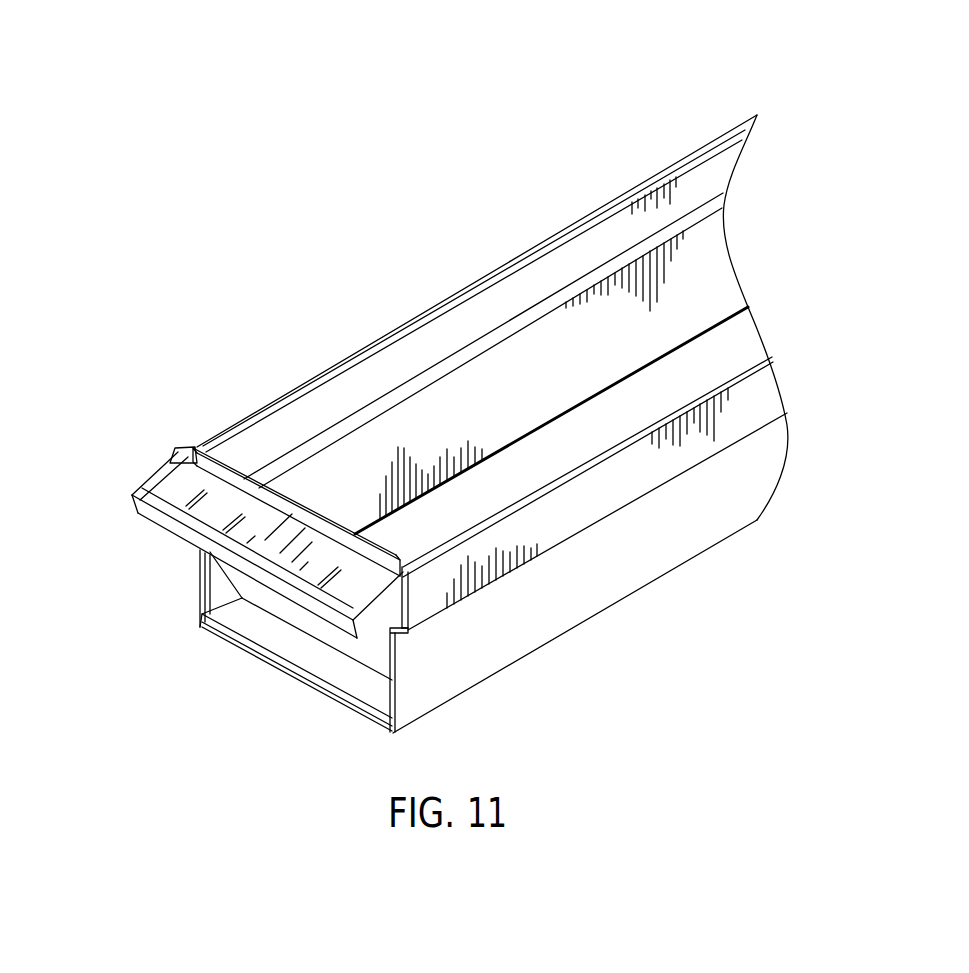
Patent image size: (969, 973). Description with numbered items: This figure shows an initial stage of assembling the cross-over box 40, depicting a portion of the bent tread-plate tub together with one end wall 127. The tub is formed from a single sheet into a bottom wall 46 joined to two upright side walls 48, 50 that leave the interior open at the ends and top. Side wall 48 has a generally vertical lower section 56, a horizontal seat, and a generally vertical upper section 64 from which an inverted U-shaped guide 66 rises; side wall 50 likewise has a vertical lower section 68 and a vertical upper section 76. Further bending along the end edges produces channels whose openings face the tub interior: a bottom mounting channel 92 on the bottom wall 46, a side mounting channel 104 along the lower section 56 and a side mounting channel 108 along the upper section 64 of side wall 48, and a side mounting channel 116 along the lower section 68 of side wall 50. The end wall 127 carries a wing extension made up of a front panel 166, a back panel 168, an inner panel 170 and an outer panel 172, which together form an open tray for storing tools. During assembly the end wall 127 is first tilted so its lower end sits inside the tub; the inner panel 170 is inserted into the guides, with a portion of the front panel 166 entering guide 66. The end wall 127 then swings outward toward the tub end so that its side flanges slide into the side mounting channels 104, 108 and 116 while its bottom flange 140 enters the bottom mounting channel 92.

The rail assembly 40 is at (592, 163).
The side wall 50 is at (461, 263).
The upper section 76 is at (717, 167).
The lower section 68 is at (712, 250).
The bottom wall 46 is at (742, 330).
The upper section 64 is at (758, 392).
The side wall 48 is at (703, 577).
The lower section 56 is at (752, 492).
The guide 66 is at (407, 578).
The side mounting channel 108 is at (410, 633).
The end wall 127 is at (118, 487).
The outer panel 172 is at (165, 524).
The inner panel 170 is at (237, 462).
The back panel 168 is at (176, 465).
The bottom mounting channel 92 is at (307, 683).
The side mounting channel 116 is at (200, 604).
The bottom flange 140 is at (269, 617).
The side mounting channel 104 is at (370, 725).
The front panel 166 is at (407, 640).